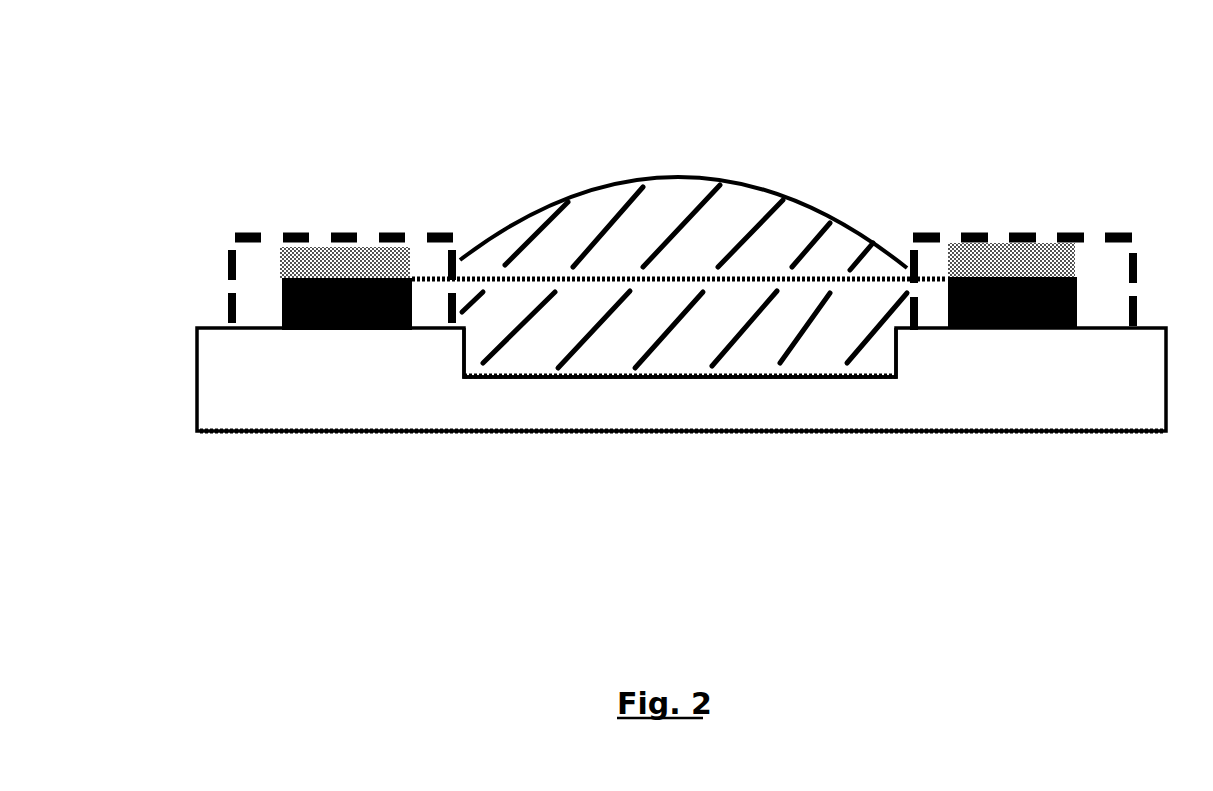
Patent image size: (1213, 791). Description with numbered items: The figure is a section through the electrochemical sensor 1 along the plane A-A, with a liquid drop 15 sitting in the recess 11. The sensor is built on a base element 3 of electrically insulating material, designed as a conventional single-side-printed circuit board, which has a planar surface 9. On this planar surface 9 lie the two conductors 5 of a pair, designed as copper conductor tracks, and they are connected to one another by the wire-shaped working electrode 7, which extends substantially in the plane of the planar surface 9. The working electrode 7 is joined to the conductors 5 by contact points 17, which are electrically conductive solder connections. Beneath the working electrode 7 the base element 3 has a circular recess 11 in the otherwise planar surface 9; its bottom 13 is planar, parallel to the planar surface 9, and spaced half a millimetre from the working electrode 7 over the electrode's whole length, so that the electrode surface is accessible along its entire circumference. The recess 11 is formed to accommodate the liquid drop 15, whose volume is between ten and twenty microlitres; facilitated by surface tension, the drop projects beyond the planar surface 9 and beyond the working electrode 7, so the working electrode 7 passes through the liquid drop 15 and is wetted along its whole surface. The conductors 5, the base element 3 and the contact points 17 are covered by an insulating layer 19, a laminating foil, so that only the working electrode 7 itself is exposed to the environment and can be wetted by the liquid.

The electrochemical sensor 1 is at (205, 196).
The base element 3 is at (598, 400).
The conductors 5 is at (345, 330).
The wire-shaped working electrode 7 is at (670, 282).
The planar surface 9 is at (1148, 327).
The recess 11 is at (489, 399).
The bottom 13 is at (808, 378).
The liquid drop 15 is at (668, 207).
The contact points 17 is at (327, 255).
The insulating layer 19 is at (443, 235).